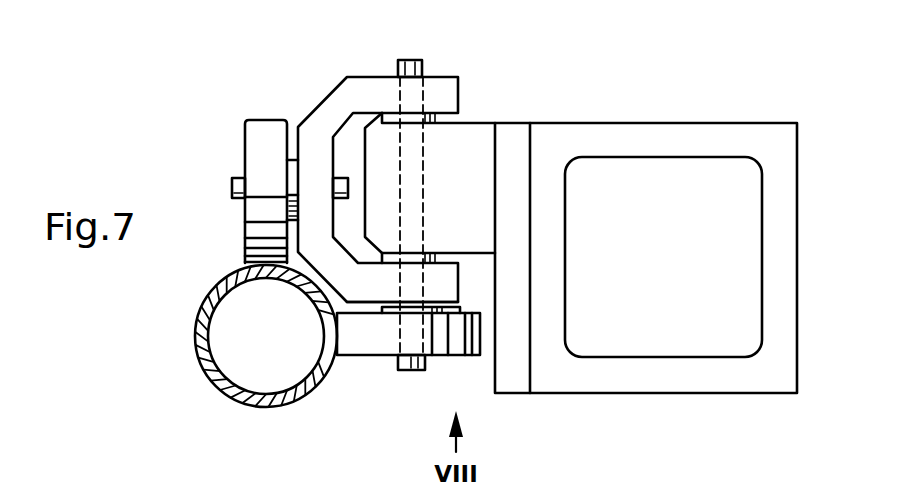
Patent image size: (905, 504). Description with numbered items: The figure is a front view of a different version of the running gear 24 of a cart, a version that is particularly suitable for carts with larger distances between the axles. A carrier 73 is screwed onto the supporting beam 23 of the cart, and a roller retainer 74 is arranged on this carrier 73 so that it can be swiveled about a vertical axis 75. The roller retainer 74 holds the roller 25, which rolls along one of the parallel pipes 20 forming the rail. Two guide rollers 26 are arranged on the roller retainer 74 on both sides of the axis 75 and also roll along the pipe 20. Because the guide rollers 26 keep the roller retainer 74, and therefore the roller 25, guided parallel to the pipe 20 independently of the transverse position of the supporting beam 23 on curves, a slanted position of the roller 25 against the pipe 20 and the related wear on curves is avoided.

The pipe 20 is at (210, 373).
The supporting beam 23 is at (610, 135).
The running gear 24 is at (466, 65).
The roller 25 is at (263, 153).
The guide roller 26 is at (387, 337).
The carrier 73 is at (468, 158).
The roller retainer 74 is at (345, 103).
The vertical axis 75 is at (400, 62).